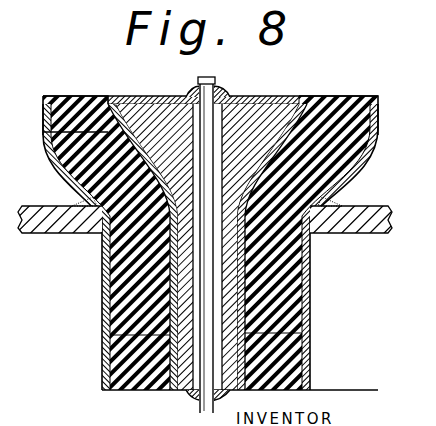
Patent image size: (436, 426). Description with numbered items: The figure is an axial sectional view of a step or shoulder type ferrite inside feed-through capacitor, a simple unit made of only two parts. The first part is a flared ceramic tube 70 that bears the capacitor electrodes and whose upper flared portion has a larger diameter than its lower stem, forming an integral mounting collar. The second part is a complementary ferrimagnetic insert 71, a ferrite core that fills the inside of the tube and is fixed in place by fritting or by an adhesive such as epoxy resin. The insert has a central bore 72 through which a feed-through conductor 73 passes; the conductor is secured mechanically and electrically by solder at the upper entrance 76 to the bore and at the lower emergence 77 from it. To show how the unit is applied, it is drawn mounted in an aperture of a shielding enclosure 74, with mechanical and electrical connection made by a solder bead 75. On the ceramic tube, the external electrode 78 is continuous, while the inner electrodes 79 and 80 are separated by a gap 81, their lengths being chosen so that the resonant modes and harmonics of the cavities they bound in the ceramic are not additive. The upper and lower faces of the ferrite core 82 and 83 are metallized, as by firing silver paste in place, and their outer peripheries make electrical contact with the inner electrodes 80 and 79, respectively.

The flared ceramic tube 70 is at (98, 68).
The ferrimagnetic insert 71 is at (155, 103).
The central bore 72 is at (220, 98).
The feed-through conductor 73 is at (204, 78).
The shielding enclosure 74 is at (40, 184).
The solder bead 75 is at (340, 205).
The upper entrance 76 is at (228, 99).
The lower emergence 77 is at (190, 397).
The external electrode 78 is at (102, 312).
The inner electrode 79 is at (140, 337).
The inner electrode 80 is at (55, 131).
The gap 81 is at (296, 242).
The upper face of the ferrite core 82 is at (290, 101).
The lower face of the ferrite core 83 is at (238, 396).